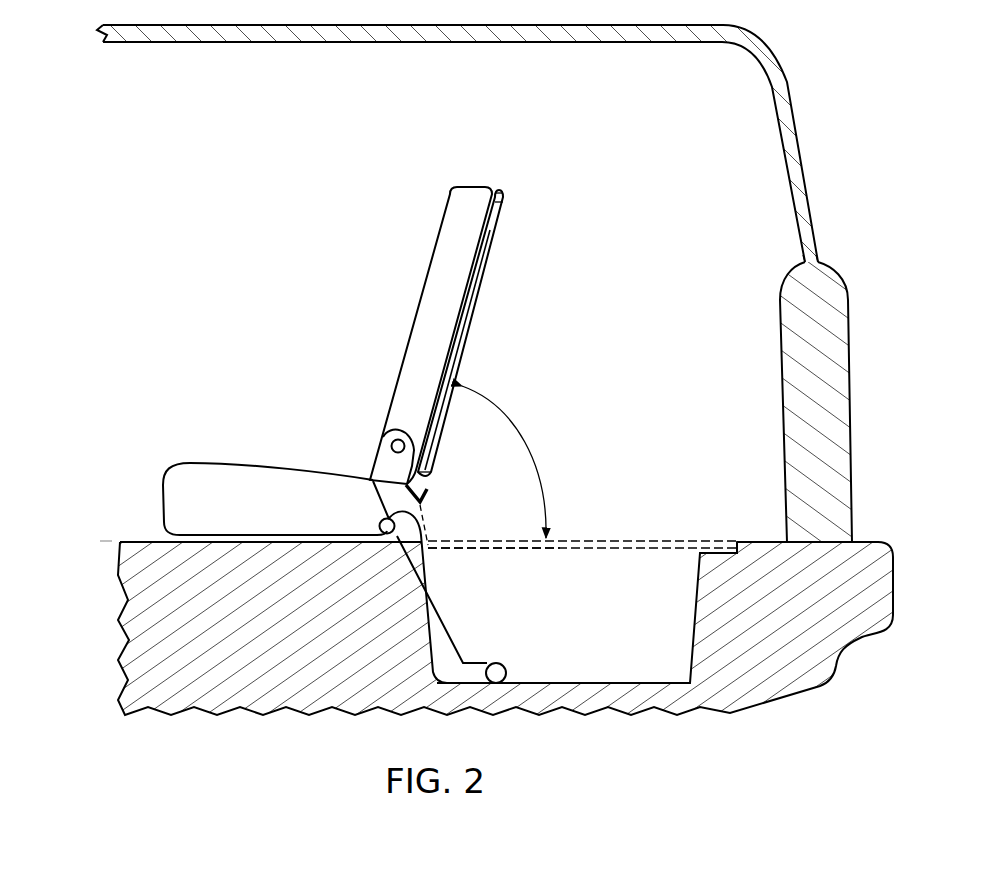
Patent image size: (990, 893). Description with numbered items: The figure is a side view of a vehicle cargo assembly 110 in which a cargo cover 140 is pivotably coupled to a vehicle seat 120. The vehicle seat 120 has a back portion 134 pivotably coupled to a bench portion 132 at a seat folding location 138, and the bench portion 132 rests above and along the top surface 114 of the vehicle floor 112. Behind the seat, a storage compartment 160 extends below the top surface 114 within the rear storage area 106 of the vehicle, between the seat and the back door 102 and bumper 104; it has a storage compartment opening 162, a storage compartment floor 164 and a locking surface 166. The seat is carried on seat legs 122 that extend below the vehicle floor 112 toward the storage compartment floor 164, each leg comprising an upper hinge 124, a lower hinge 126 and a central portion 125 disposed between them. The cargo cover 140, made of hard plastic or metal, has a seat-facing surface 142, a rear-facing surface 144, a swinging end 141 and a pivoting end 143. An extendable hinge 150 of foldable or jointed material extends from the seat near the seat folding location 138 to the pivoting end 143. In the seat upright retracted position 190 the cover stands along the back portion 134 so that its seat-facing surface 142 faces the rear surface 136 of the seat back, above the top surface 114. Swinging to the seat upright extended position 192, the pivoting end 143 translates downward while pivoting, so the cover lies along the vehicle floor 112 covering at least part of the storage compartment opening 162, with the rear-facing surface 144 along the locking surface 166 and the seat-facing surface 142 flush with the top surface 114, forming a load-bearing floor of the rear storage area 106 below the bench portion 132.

The back door 102 is at (852, 372).
The bumper 104 is at (893, 582).
The rear storage area 106 is at (713, 295).
The vehicle cargo assembly 110 is at (661, 134).
The vehicle floor 112 is at (98, 541).
The top surface 114 is at (128, 541).
The vehicle seat 120 is at (498, 357).
The seat legs 122 is at (415, 597).
The upper hinge 124 is at (387, 535).
The central portion 125 is at (443, 628).
The lower hinge 126 is at (502, 672).
The bench portion 132 is at (206, 477).
The back portion 134 is at (448, 248).
The rear surface 136 is at (490, 223).
The seat folding location 138 is at (384, 443).
The cargo cover 140 is at (563, 357).
The swinging end 141 is at (500, 186).
The seat-facing surface 142 is at (468, 303).
The pivoting end 143 is at (442, 475).
The rear-facing surface 144 is at (487, 272).
The extendable hinge 150 is at (424, 503).
The storage compartment 160 is at (684, 607).
The storage compartment opening 162 is at (597, 558).
The storage compartment floor 164 is at (665, 682).
The locking surface 166 is at (712, 545).
The seat upright retracted position 190 is at (472, 352).
The seat upright extended position 192 is at (577, 533).